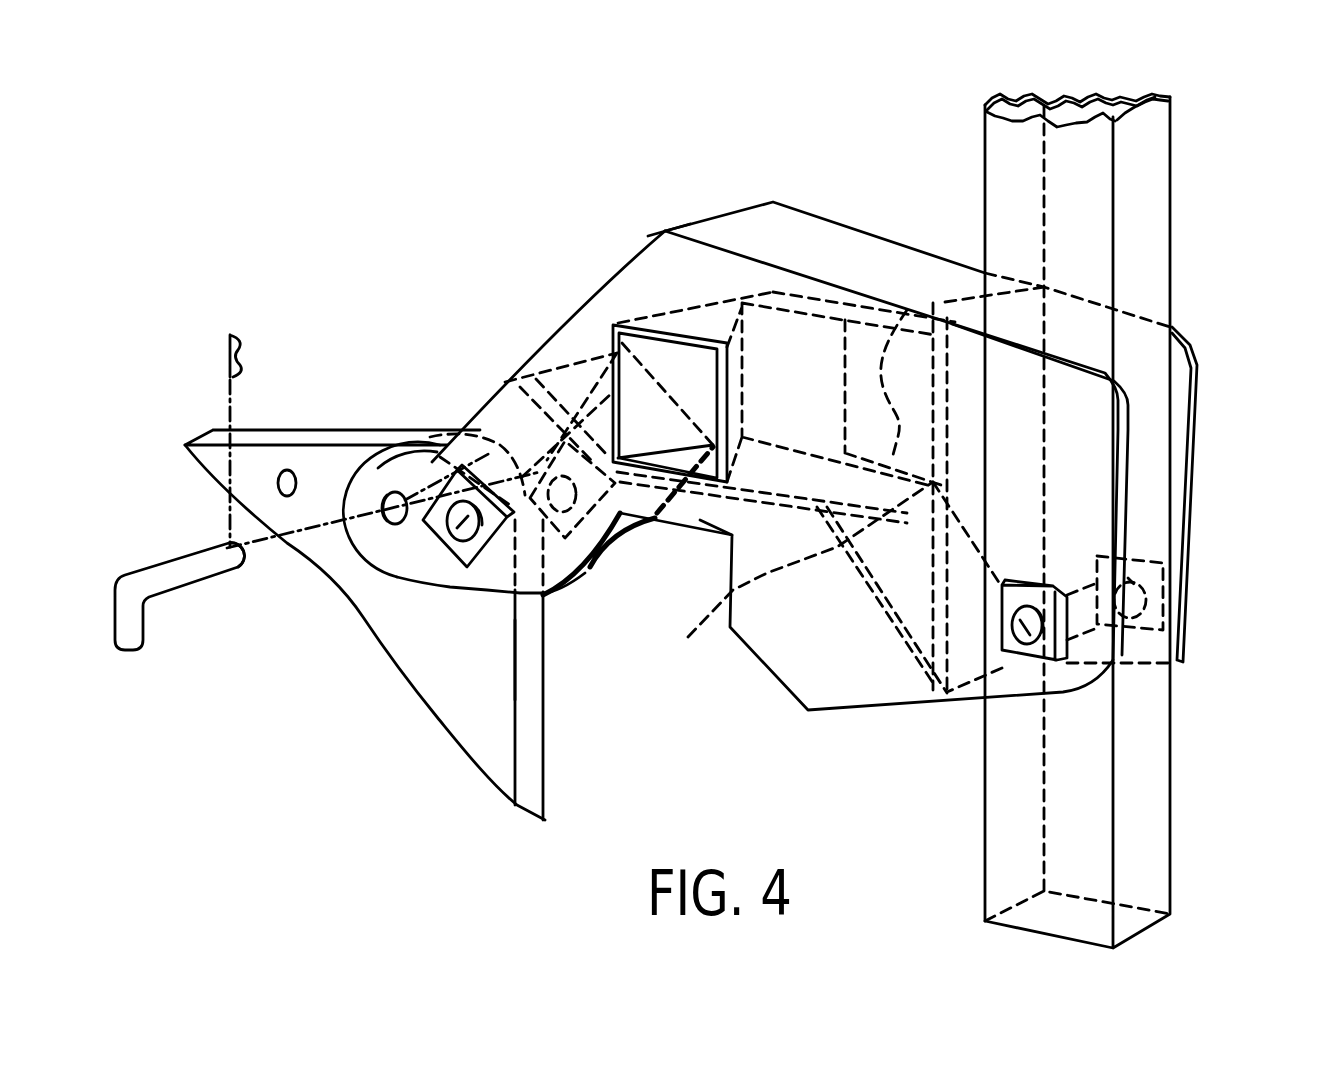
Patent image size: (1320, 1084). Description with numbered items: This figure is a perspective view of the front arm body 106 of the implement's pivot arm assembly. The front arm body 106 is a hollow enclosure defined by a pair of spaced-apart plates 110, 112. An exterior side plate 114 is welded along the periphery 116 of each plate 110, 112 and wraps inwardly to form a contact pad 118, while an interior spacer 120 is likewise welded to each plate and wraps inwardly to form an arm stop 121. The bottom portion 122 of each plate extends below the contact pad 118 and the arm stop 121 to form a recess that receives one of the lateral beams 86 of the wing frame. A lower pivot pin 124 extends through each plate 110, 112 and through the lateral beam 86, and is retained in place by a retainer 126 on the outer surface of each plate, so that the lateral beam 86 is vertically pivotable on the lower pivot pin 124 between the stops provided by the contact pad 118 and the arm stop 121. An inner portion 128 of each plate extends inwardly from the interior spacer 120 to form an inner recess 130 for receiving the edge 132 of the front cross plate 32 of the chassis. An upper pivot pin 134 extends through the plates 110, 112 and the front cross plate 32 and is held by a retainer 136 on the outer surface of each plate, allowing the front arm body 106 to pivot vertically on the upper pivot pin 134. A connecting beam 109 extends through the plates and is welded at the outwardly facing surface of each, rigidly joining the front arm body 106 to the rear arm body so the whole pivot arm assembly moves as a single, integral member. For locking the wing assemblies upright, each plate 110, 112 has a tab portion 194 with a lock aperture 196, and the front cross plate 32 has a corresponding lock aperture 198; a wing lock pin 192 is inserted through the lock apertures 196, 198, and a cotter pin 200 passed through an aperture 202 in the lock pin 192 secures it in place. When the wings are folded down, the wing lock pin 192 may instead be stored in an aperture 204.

The front cross plate 32 is at (500, 723).
The lateral beam 86 is at (1150, 752).
The front arm body 106 is at (832, 697).
The connecting beam 109 is at (775, 293).
The plate 110 is at (762, 620).
The plate 112 is at (827, 240).
The exterior side plate 114 is at (760, 223).
The periphery 116 is at (657, 227).
The contact pad 118 is at (907, 310).
The interior spacer 120 is at (798, 580).
The arm stop 121 is at (963, 637).
The bottom portion 122 is at (1183, 405).
The lower pivot pin 124 is at (1022, 650).
The retainer 126 is at (1170, 613).
The inner portion 128 is at (675, 522).
The inner recess 130 is at (725, 558).
The edge 132 is at (530, 657).
The upper pivot pin 134 is at (460, 565).
The retainer 136 is at (478, 553).
The wing lock pin 192 is at (192, 587).
The tab portion 194 is at (390, 543).
The lock aperture 196 is at (427, 543).
The lock aperture 198 is at (415, 443).
The cotter pin 200 is at (243, 330).
The aperture 202 is at (228, 547).
The aperture 204 is at (293, 470).